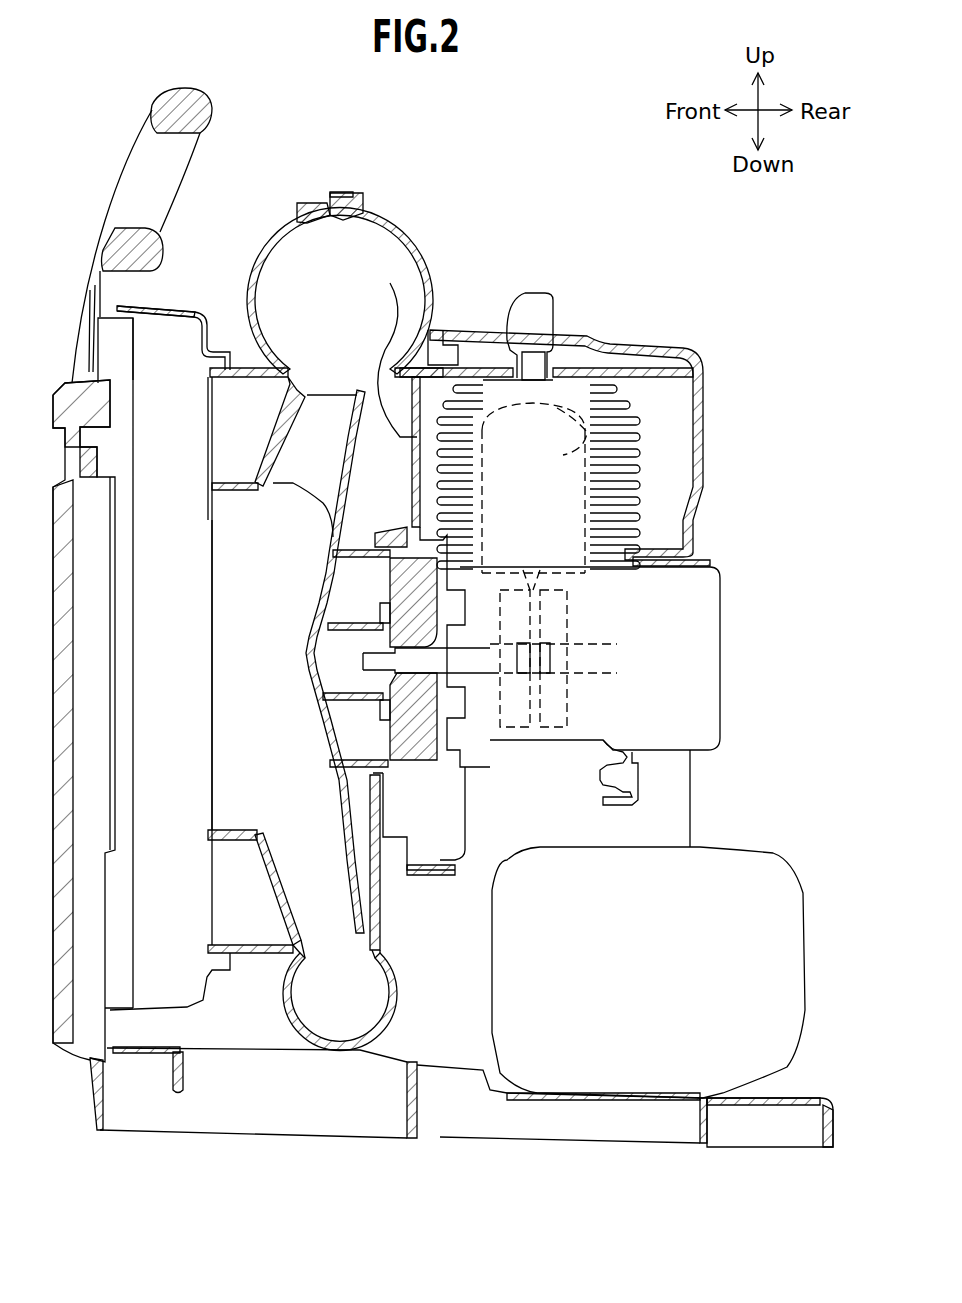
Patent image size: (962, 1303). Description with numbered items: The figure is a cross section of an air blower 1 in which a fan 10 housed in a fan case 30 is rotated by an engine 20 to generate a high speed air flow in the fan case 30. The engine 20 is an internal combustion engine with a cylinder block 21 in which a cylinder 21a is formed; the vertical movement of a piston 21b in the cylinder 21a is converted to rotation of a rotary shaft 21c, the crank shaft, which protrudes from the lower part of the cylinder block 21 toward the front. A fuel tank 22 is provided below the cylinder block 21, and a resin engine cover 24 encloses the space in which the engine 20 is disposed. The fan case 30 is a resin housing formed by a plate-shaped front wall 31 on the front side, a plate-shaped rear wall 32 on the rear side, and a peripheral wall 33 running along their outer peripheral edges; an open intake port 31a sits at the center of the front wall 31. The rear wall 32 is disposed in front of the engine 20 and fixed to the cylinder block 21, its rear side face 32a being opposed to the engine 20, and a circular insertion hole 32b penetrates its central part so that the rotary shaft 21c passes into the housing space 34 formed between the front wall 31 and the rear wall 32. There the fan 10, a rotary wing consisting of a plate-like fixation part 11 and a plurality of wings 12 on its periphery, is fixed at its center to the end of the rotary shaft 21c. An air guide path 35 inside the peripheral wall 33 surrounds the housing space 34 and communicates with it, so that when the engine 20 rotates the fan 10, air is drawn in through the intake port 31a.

The air blower 1 is at (555, 148).
The fan 10 is at (327, 393).
The fixation part 11 is at (323, 633).
The wings 12 is at (293, 483).
The engine 20 is at (723, 585).
The cylinder block 21 is at (507, 395).
The cylinder 21a is at (563, 360).
The piston 21b is at (490, 510).
The rotary shaft 21c is at (473, 677).
The fuel tank 22 is at (752, 867).
The engine cover 24 is at (705, 362).
The fan case 30 is at (352, 190).
The front wall 31 is at (180, 373).
The intake port 31a is at (212, 510).
The rear wall 32 is at (432, 267).
The rear side face 32a is at (443, 418).
The insertion hole 32b is at (390, 553).
The peripheral wall 33 is at (280, 227).
The housing space 34 is at (270, 708).
The air guide path 35 is at (366, 298).